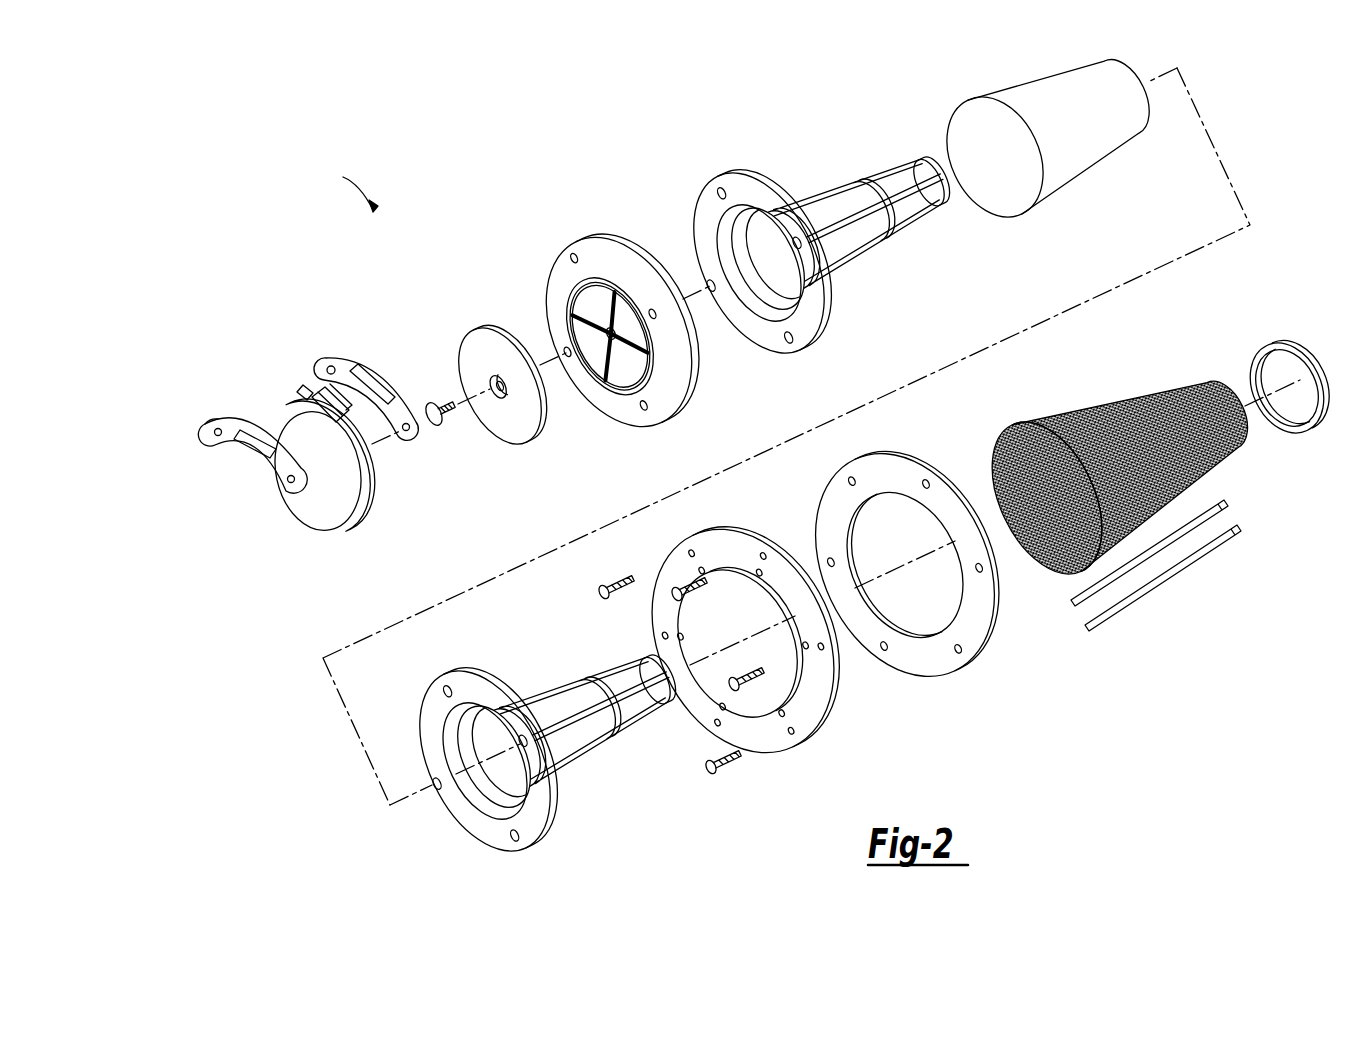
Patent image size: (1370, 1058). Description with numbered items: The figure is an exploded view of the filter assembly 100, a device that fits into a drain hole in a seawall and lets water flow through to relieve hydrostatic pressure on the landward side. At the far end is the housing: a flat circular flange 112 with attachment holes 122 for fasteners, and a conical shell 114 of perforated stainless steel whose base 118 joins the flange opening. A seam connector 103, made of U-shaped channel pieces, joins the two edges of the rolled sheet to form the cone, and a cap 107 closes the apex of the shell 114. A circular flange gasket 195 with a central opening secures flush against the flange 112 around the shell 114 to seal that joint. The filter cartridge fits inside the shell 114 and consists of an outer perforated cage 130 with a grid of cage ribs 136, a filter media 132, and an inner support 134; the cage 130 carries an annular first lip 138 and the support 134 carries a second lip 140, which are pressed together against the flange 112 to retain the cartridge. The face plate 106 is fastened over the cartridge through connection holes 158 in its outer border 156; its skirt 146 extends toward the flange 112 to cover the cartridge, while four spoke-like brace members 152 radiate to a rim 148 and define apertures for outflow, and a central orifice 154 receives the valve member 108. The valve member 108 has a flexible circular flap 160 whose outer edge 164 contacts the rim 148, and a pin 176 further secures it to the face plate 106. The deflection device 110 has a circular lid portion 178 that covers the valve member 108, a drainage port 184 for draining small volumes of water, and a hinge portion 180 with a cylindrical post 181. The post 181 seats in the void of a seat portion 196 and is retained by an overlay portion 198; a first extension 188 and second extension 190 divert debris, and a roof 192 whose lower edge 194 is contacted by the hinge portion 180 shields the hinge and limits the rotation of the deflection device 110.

The filter assembly 100 is at (344, 183).
The seam connector 103 is at (1227, 530).
The face plate 106 is at (614, 323).
The cap 107 is at (1310, 358).
The valve member 108 is at (484, 399).
The deflection device 110 is at (327, 450).
The flange 112 is at (745, 643).
The shell 114 is at (1133, 396).
The base 118 is at (510, 793).
The attachment holes 122 is at (793, 731).
The cage 130 is at (568, 768).
The filter media 132 is at (1078, 150).
The support 134 is at (805, 200).
The cage ribs 136 is at (610, 718).
The first lip 138 is at (541, 765).
The second lip 140 is at (815, 255).
The skirt 146 is at (690, 372).
The rim 148 is at (578, 305).
The brace members 152 is at (598, 382).
The orifice 154 is at (608, 336).
The outer border 156 is at (625, 410).
The connection holes 158 is at (646, 407).
The flap 160 is at (490, 410).
The outer edge 164 is at (507, 427).
The pin 176 is at (434, 427).
The lid portion 178 is at (323, 443).
The hinge portion 180 is at (320, 392).
The cylindrical post 181 is at (300, 390).
The drainage port 184 is at (301, 520).
The first extension 188 is at (220, 433).
The second extension 190 is at (283, 474).
The roof 192 is at (243, 424).
The lower edge 194 is at (236, 438).
The flange gasket 195 is at (968, 622).
The seat portion 196 is at (340, 356).
The overlay portion 198 is at (212, 421).